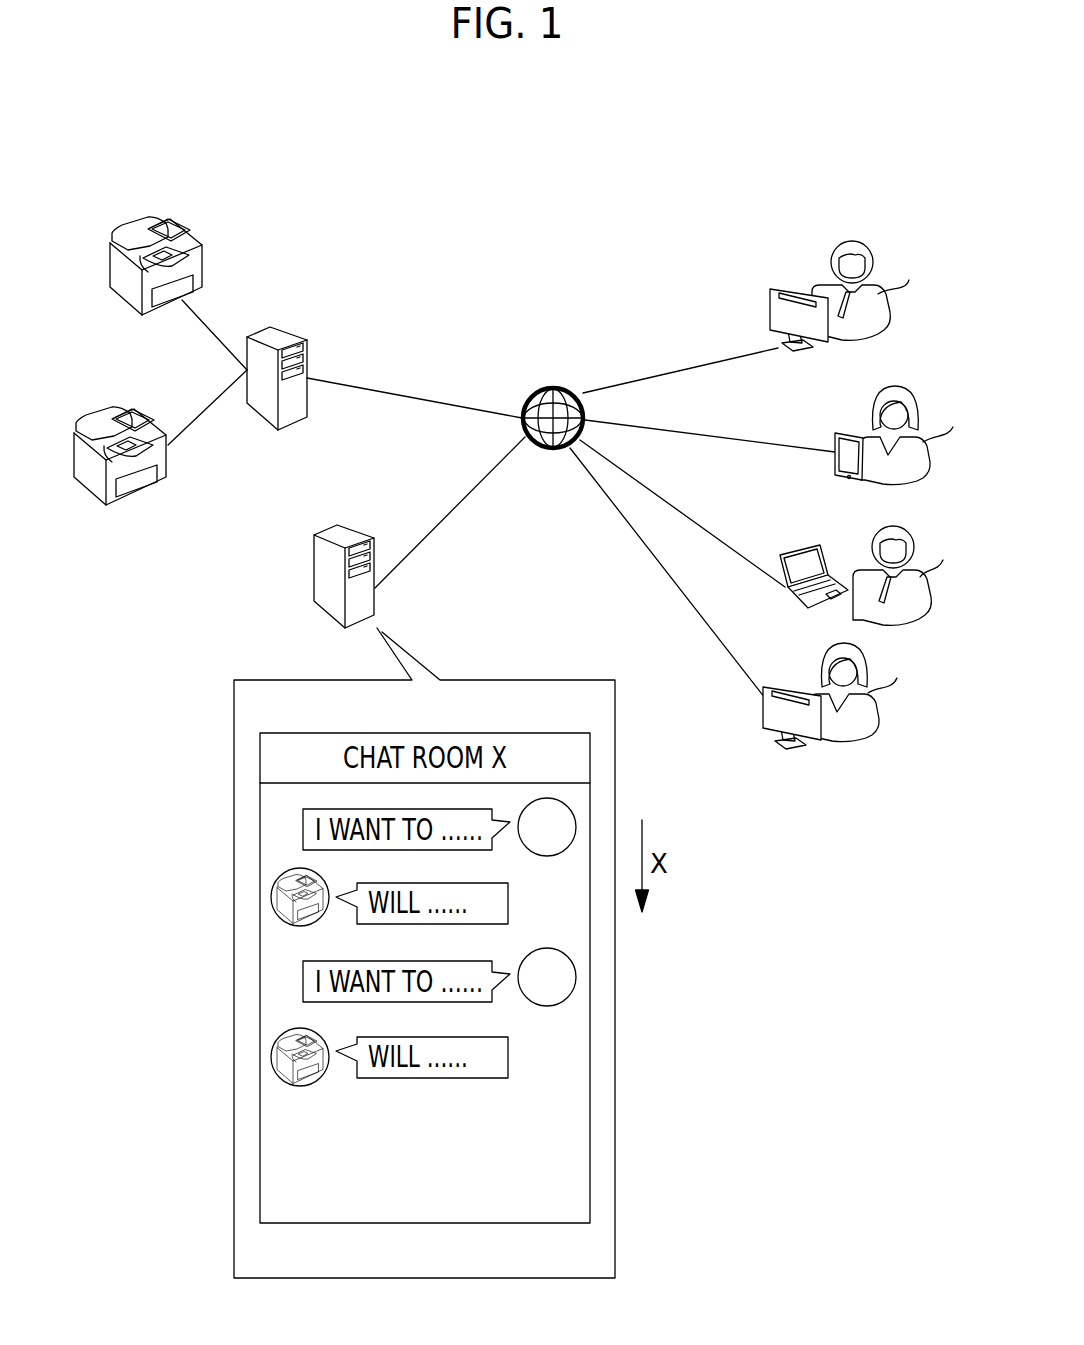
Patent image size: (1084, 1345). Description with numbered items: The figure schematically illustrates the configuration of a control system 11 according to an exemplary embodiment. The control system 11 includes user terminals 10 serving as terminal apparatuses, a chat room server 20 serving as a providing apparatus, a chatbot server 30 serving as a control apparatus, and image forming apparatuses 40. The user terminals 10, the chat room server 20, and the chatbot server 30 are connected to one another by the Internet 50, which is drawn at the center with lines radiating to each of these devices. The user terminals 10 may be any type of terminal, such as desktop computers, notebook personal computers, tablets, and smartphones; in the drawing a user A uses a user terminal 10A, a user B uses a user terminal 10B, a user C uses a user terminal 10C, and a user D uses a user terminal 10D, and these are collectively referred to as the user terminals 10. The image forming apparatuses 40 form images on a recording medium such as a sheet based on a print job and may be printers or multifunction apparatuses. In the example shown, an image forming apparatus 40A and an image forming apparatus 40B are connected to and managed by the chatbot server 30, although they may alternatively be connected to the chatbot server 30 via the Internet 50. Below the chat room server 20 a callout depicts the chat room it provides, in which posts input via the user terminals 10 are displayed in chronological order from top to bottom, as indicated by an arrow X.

The control system 11 is at (600, 111).
The user terminals 10 is at (890, 202).
The user terminal 10A is at (787, 290).
The user terminal 10B is at (850, 434).
The user terminal 10C is at (797, 548).
The user terminal 10D is at (792, 690).
The chat room server 20 is at (325, 527).
The chatbot server 30 is at (263, 329).
The image forming apparatuses 40 is at (222, 193).
The image forming apparatus 40A is at (132, 226).
The image forming apparatus 40B is at (97, 415).
The Internet 50 is at (553, 388).